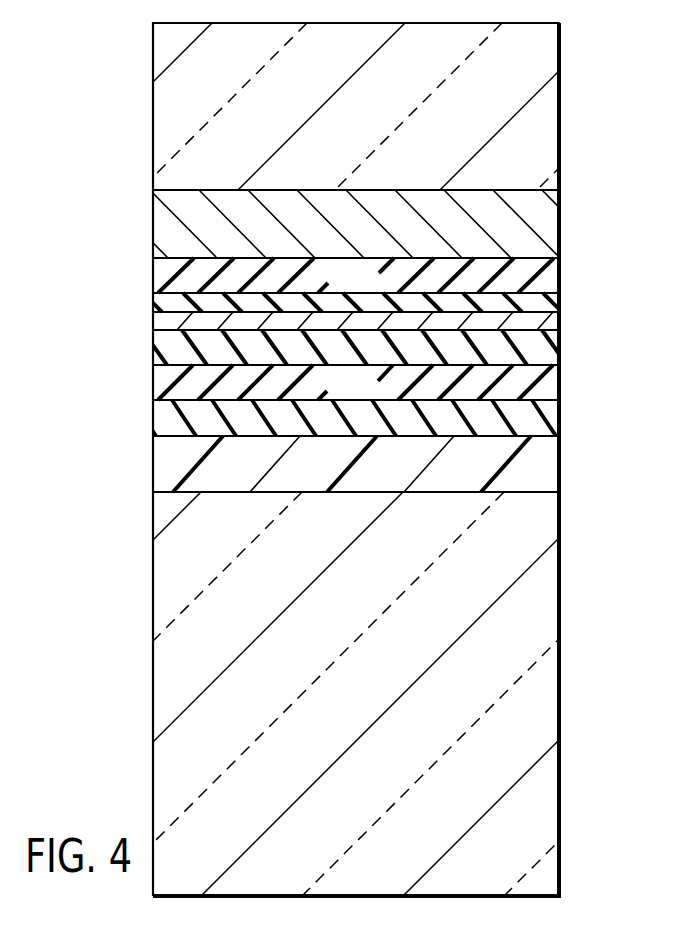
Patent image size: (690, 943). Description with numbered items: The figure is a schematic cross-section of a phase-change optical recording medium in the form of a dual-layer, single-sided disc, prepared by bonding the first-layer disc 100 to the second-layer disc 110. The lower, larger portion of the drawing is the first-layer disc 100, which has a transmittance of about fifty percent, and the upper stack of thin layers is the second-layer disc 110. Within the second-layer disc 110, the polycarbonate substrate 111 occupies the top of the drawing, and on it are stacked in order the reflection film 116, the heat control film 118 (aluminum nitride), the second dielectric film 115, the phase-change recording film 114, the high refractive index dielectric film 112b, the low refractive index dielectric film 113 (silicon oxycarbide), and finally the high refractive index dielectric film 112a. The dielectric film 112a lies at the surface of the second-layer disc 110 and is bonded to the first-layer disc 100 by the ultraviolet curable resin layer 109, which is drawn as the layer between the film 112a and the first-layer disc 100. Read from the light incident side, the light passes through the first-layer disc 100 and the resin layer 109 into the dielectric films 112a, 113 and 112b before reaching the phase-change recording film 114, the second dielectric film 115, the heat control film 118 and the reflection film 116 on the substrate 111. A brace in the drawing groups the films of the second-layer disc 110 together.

The L0 disc 100 is at (575, 689).
The ultraviolet curable resin layer 109 is at (547, 466).
The L1 disc 110 is at (622, 430).
The polycarbonate substrate 111 is at (547, 118).
The high refractive index dielectric film 112a is at (548, 412).
The high refractive index dielectric film 112b is at (543, 342).
The low refractive index dielectric film 113 is at (545, 384).
The phase-change recording film 114 is at (542, 308).
The second dielectric film 115 is at (545, 306).
The reflection film 116 is at (547, 227).
The heat control film 118 is at (546, 281).